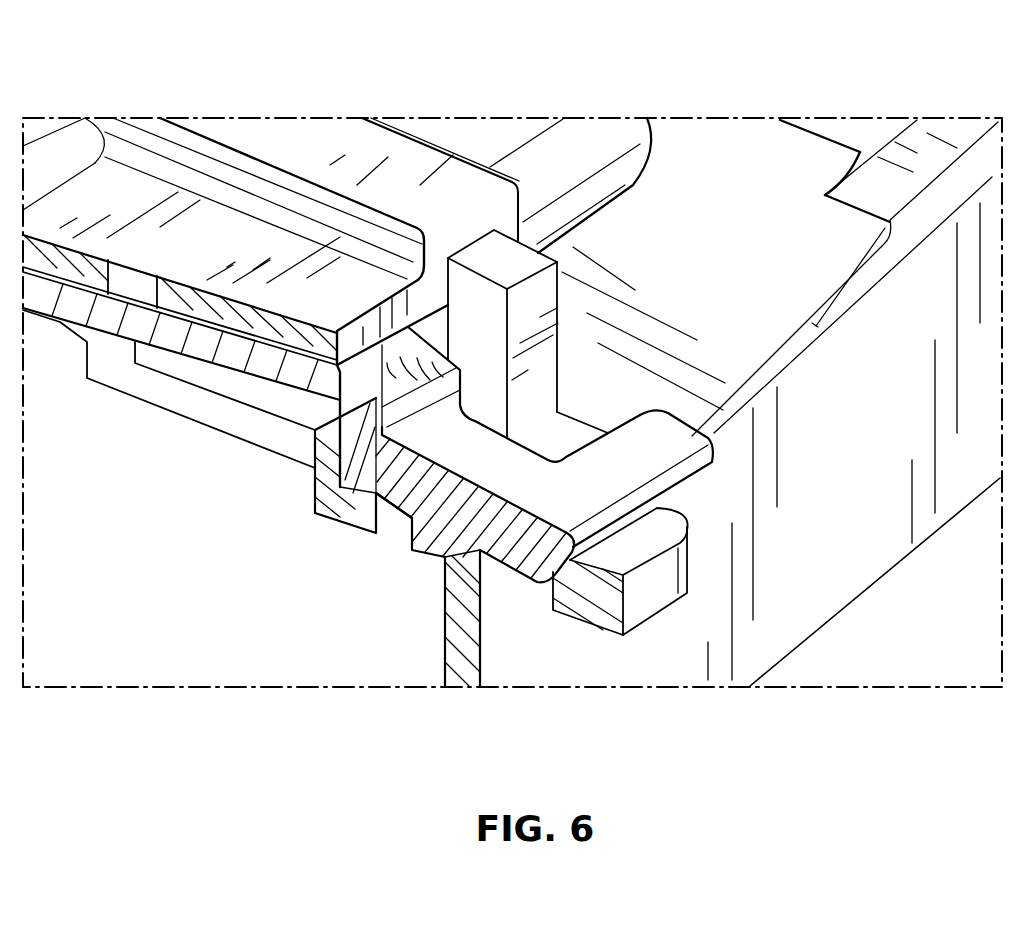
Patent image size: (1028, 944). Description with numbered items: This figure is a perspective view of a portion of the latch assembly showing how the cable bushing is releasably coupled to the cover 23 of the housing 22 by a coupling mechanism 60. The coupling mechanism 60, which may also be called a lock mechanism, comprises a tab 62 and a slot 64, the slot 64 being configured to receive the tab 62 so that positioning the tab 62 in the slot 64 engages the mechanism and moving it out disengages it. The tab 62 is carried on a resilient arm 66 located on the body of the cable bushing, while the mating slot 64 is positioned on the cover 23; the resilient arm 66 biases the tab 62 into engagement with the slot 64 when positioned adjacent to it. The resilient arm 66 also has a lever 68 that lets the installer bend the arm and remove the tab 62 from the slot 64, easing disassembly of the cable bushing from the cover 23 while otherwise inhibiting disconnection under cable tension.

The housing 22 is at (830, 583).
The cover 23 is at (764, 158).
The coupling mechanism 60 is at (600, 400).
The tab 62 is at (530, 590).
The slot 64 is at (509, 608).
The resilient arm 66 is at (458, 471).
The lever 68 is at (665, 437).